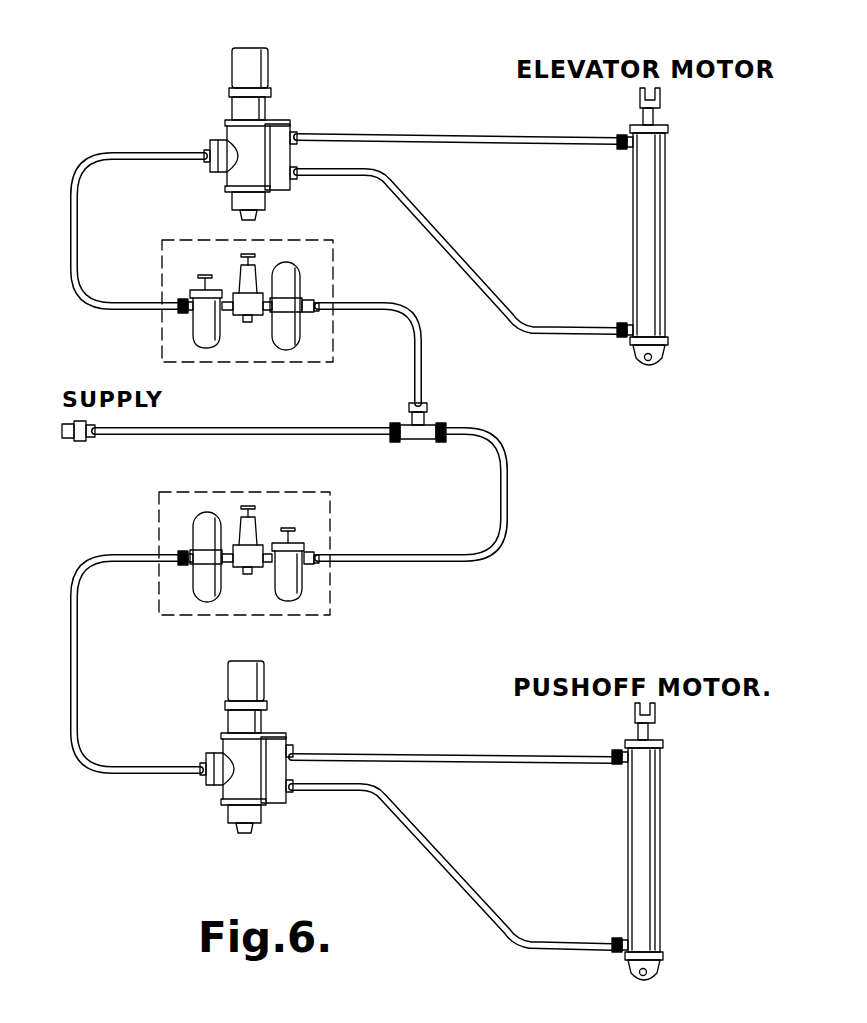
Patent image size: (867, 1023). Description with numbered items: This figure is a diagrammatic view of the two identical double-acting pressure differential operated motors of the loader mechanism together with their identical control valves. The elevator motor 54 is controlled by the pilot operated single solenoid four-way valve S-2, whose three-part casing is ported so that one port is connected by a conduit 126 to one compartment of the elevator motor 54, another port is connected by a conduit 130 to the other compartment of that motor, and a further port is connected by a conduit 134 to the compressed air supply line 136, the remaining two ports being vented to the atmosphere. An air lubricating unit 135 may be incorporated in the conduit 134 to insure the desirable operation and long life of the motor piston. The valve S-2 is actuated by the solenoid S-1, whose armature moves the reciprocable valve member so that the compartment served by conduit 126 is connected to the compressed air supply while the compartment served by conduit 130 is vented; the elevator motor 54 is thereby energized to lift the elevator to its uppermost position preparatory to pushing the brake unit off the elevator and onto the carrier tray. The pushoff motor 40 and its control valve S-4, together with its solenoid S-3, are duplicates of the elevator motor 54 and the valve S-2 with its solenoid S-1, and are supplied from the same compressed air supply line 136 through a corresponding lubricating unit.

The solenoid S-1 is at (252, 55).
The pilot operated single solenoid four-way valve S-2 is at (293, 118).
The solenoid S-3 is at (243, 668).
The control valve S-4 is at (276, 733).
The conduit 126 is at (490, 135).
The conduit 130 is at (467, 268).
The conduit 134 is at (75, 232).
The air lubricating unit 135 is at (322, 270).
The compressed air supply line 136 is at (200, 428).
The elevator motor 54 is at (668, 230).
The pushoff motor 40 is at (663, 856).